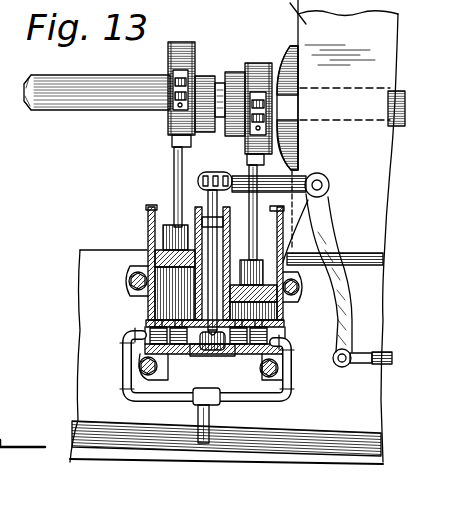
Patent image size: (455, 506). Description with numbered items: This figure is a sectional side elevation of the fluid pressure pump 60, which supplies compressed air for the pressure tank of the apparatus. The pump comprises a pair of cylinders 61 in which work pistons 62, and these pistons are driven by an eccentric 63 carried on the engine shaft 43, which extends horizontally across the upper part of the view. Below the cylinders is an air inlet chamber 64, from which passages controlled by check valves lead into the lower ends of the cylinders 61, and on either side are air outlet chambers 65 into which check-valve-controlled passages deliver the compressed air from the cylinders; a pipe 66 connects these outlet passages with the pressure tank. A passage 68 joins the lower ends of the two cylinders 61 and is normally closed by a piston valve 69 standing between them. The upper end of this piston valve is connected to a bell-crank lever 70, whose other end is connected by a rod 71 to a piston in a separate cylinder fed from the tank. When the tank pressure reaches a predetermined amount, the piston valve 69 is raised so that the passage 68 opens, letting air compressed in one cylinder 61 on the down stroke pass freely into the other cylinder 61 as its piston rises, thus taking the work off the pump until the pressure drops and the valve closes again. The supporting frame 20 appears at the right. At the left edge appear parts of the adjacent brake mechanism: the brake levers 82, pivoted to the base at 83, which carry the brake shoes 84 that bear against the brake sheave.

The frame 20 is at (237, 232).
The engine shaft 43 is at (106, 104).
The eccentric 63 is at (196, 56).
The fluid pressure pump 60 is at (166, 207).
The cylinders 61 is at (150, 219).
The pistons 62 is at (150, 262).
The air inlet chamber 64 is at (225, 345).
The air outlet chambers 65 is at (130, 332).
The pipe 66 is at (198, 426).
The passage 68 is at (203, 336).
The piston valve 69 is at (206, 186).
The bell-crank lever 70 is at (292, 172).
The rod 71 is at (374, 353).
The brake levers 82 is at (0, 233).
The brake shoes 84 is at (9, 266).
The pivot 83 is at (22, 422).